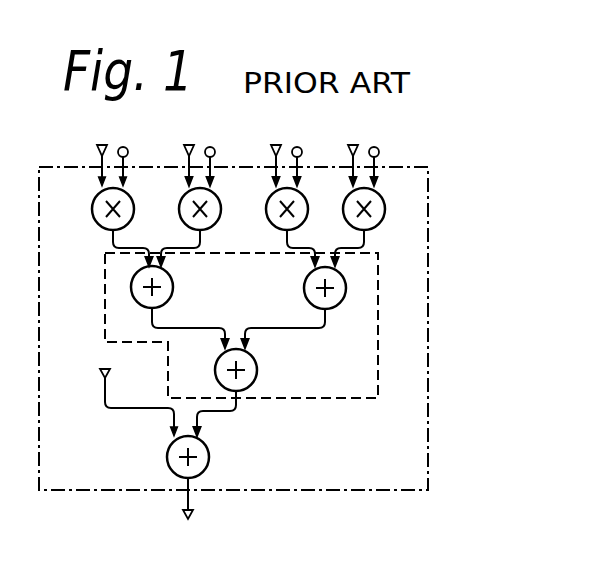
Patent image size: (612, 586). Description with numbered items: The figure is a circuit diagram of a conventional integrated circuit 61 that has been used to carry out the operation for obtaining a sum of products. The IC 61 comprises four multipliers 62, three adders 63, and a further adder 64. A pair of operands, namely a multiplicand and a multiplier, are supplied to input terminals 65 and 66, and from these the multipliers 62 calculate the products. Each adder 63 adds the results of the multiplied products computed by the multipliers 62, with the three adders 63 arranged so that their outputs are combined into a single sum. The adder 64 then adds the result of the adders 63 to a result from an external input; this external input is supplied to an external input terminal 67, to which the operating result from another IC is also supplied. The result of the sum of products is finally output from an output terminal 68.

The integrated circuit 61 is at (411, 166).
The multiplier 62 is at (385, 210).
The adder 63 is at (175, 295).
The adder 64 is at (209, 455).
The input terminal 65 is at (100, 145).
The input terminal 66 is at (126, 148).
The external input terminal 67 is at (100, 374).
The output terminal 68 is at (193, 516).